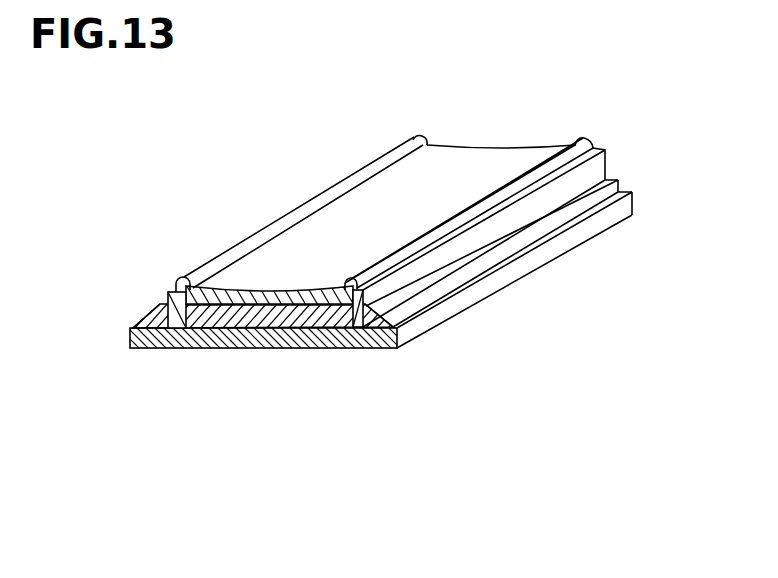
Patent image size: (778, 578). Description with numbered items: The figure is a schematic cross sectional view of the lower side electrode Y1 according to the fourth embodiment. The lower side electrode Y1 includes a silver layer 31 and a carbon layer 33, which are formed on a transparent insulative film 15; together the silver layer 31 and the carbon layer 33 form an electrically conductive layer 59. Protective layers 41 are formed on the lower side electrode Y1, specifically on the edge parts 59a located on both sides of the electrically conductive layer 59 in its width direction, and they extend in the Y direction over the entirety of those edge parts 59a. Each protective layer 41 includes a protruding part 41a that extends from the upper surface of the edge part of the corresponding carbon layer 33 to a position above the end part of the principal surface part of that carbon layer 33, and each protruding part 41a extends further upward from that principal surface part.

The transparent insulative film 15 is at (213, 348).
The silver layer 31 is at (279, 348).
The carbon layer 33 is at (335, 348).
The electrically conductive layer 59 is at (364, 290).
The edge parts 59a is at (162, 297).
The protective layers 41 is at (363, 204).
The protruding parts 41a is at (290, 213).
The lower side electrode Y1 is at (384, 120).